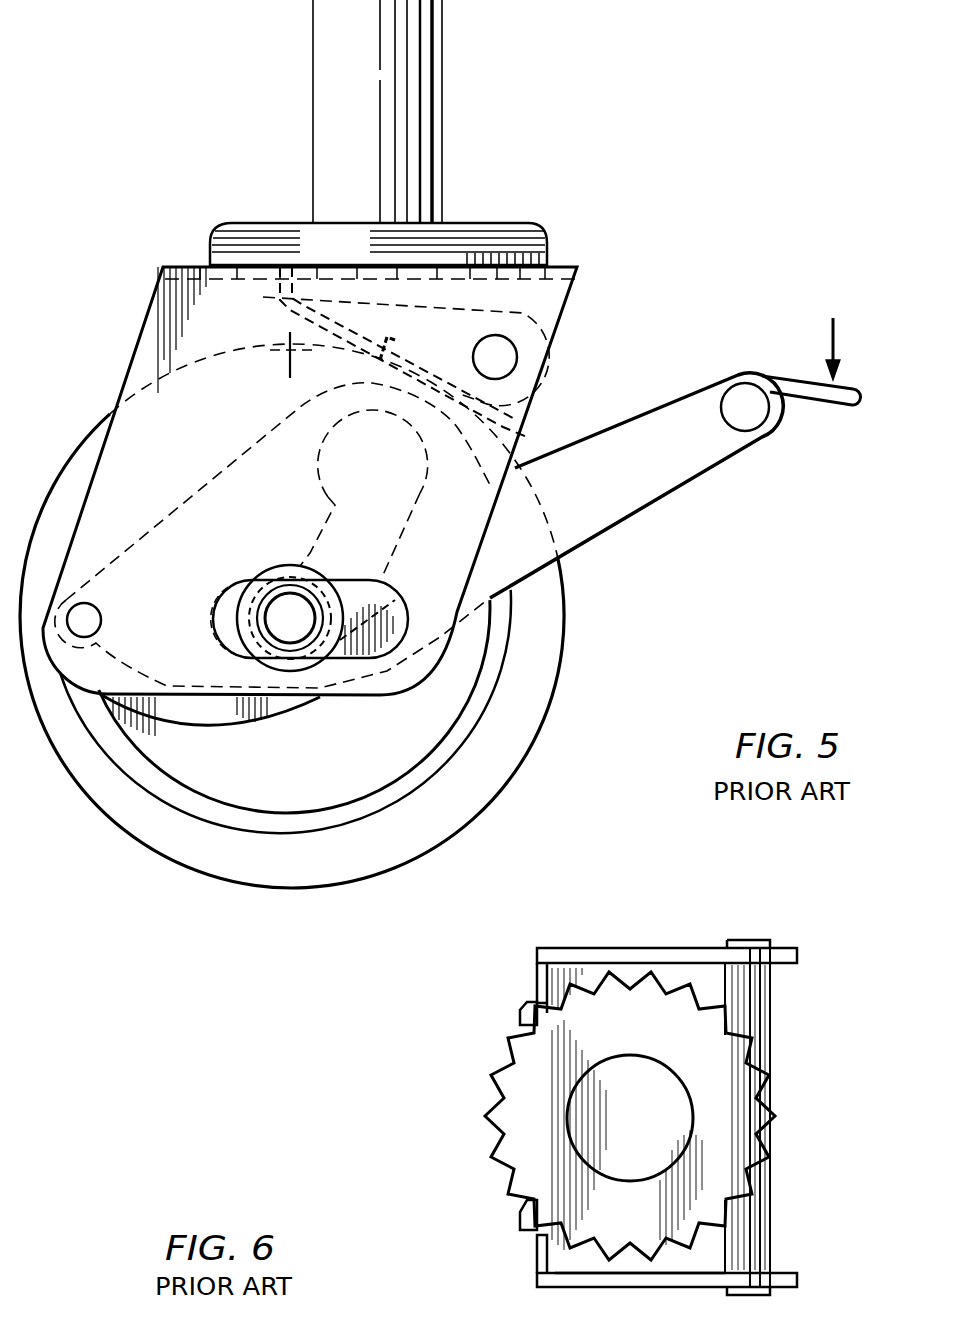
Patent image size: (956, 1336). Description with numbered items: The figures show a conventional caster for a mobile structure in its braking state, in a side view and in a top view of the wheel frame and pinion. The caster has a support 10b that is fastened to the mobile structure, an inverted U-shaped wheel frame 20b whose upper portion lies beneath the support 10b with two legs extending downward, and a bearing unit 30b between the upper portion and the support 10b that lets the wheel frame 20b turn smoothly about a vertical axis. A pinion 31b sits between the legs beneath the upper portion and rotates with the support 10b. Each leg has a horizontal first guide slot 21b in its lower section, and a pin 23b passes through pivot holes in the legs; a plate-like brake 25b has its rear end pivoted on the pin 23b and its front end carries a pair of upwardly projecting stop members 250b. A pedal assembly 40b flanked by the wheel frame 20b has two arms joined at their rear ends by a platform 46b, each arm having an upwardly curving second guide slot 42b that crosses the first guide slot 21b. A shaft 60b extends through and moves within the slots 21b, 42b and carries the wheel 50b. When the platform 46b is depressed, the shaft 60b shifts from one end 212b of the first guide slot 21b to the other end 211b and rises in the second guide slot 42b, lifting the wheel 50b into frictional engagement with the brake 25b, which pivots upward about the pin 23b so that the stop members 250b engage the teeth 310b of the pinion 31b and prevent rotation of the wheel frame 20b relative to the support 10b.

In FIG. 5, the support 10b is at (472, 222).
In FIG. 5, the wheel frame 20b is at (553, 308).
In FIG. 5, the first guide slot 21b is at (413, 612).
In FIG. 5, the other end of first guide slot 211b is at (382, 580).
In FIG. 5, the one end of first guide slot 212b is at (220, 600).
In FIG. 6, the pin 23b is at (767, 1003).
In FIG. 5, the brake 25b is at (307, 340).
In FIG. 6, the brake 25b is at (598, 1267).
In FIG. 5, the stop members 250b is at (280, 292).
In FIG. 6, the stop members 250b is at (527, 1205).
In FIG. 5, the bearing unit 30b is at (530, 225).
In FIG. 5, the pinion 31b is at (548, 250).
In FIG. 6, the pinion 31b is at (753, 1102).
In FIG. 5, the teeth 310b is at (290, 266).
In FIG. 6, the teeth 310b is at (517, 1186).
In FIG. 5, the pedal assembly 40b is at (643, 490).
In FIG. 5, the second guide slot 42b is at (416, 518).
In FIG. 5, the platform 46b is at (763, 380).
In FIG. 5, the wheel 50b is at (540, 670).
In FIG. 5, the shaft 60b is at (258, 580).